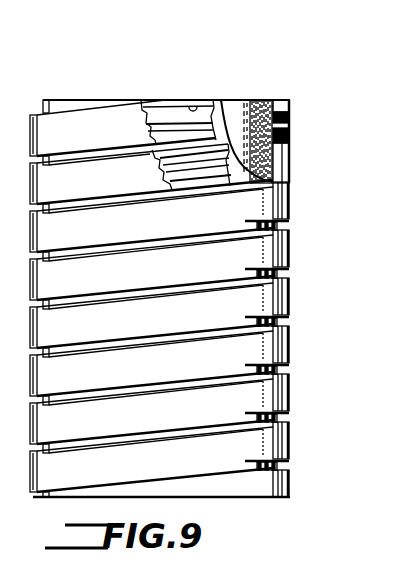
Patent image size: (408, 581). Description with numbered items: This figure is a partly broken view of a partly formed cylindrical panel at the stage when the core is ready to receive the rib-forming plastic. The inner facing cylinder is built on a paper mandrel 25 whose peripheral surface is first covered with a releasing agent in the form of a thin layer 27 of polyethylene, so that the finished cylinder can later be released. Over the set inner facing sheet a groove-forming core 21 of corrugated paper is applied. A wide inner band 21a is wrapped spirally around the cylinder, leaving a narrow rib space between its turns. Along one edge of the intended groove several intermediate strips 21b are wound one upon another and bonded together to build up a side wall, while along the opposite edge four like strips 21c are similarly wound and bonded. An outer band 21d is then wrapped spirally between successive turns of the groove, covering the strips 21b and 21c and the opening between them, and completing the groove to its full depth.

The groove-forming core 21 is at (290, 137).
The inner band 21a is at (170, 115).
The intermediate strip 21b is at (187, 128).
The strips 21c is at (193, 104).
The outer band 21d is at (118, 120).
The mandrel 25 is at (234, 107).
The layer of polyethylene 27 is at (266, 102).